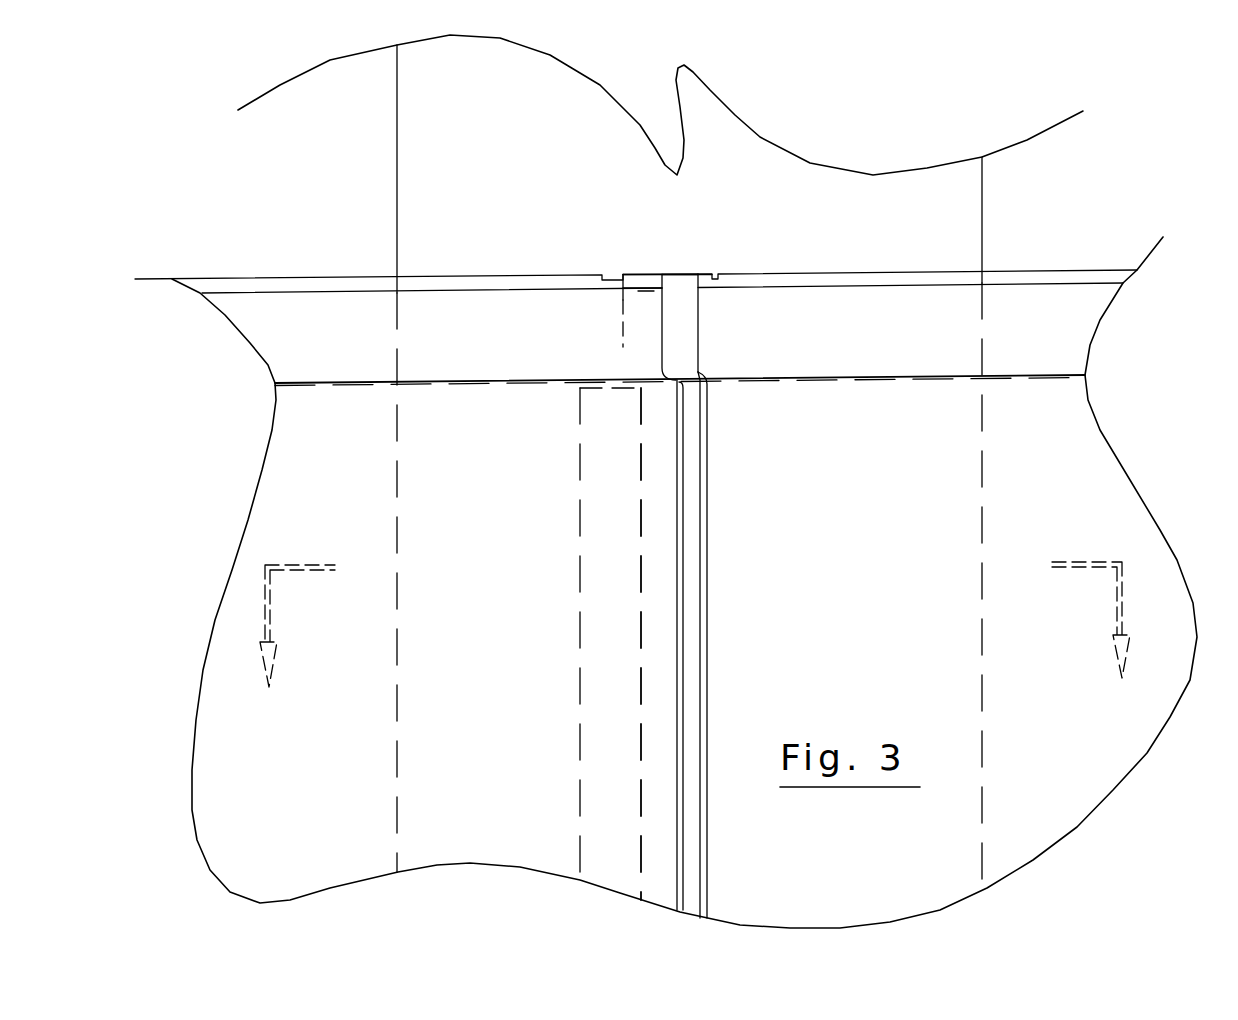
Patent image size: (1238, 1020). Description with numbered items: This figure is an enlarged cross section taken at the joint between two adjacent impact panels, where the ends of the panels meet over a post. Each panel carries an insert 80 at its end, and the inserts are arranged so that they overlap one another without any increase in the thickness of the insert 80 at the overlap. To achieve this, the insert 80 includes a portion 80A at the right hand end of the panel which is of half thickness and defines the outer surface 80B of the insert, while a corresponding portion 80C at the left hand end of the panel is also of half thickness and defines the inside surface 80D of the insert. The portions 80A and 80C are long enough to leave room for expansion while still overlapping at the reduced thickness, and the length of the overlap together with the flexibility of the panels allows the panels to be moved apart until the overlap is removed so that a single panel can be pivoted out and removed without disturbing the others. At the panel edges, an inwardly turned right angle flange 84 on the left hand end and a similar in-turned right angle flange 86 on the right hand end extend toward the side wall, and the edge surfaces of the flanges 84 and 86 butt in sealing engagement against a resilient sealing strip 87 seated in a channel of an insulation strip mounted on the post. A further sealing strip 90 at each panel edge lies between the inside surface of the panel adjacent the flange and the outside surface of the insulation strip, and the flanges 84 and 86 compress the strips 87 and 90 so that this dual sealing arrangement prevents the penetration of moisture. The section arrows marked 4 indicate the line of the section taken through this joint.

The insert 80 is at (876, 271).
The half-thickness portion of insert 80A is at (683, 273).
The outer surface of insert 80B is at (656, 274).
The half-thickness portion of insert 80C is at (633, 285).
The inside surface of insert 80D is at (640, 293).
The inwardly turned right angle flange 84 is at (676, 538).
The in-turned right angle flange 86 is at (704, 527).
The resilient sealing strip 87 is at (641, 714).
The further sealing strip 90 is at (589, 443).
The section line 4- 4 is at (699, 638).